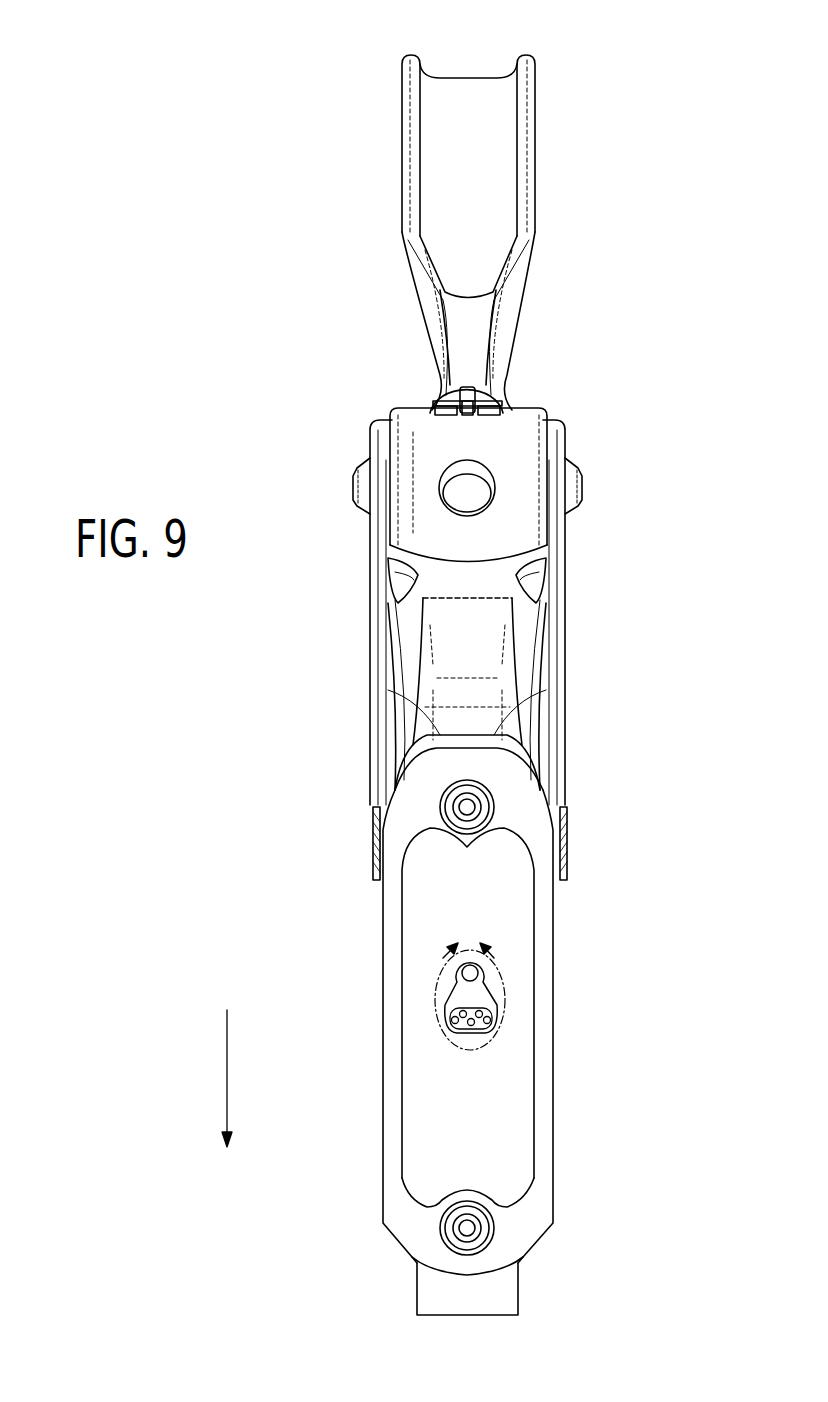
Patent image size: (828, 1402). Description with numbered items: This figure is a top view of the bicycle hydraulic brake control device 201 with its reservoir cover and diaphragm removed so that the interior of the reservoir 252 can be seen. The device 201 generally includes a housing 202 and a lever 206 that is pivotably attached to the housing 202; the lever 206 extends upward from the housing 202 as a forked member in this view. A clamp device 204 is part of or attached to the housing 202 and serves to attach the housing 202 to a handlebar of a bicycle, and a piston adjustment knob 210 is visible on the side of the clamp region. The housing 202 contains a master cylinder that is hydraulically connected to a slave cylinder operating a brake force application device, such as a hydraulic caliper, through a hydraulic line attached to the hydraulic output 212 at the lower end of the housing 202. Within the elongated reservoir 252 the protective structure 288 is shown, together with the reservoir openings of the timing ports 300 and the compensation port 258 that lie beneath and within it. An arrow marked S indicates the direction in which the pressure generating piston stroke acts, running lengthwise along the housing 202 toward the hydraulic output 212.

The bicycle hydraulic brake control device 201 is at (266, 143).
The lever 206 is at (442, 98).
The piston adjustment knob 210 is at (583, 484).
The clamp device 204 is at (500, 580).
The housing 202 is at (373, 655).
The reservoir 252 is at (503, 1140).
The compensation port 258 is at (462, 973).
The protective structure 288 is at (488, 992).
The timing ports 300 is at (445, 1028).
The hydraulic output 212 is at (470, 1317).